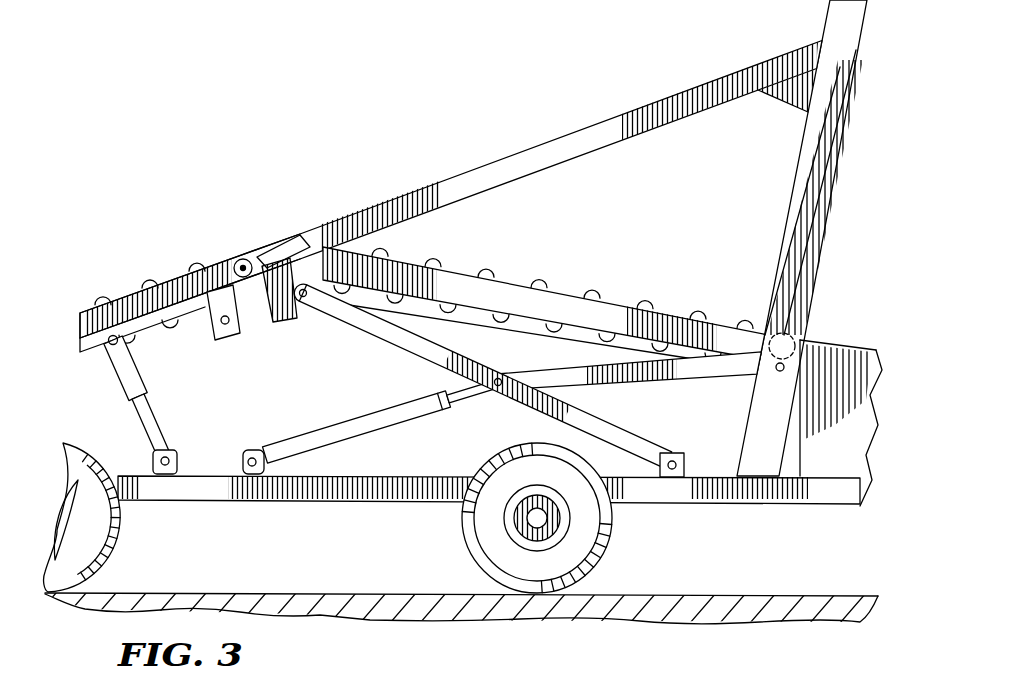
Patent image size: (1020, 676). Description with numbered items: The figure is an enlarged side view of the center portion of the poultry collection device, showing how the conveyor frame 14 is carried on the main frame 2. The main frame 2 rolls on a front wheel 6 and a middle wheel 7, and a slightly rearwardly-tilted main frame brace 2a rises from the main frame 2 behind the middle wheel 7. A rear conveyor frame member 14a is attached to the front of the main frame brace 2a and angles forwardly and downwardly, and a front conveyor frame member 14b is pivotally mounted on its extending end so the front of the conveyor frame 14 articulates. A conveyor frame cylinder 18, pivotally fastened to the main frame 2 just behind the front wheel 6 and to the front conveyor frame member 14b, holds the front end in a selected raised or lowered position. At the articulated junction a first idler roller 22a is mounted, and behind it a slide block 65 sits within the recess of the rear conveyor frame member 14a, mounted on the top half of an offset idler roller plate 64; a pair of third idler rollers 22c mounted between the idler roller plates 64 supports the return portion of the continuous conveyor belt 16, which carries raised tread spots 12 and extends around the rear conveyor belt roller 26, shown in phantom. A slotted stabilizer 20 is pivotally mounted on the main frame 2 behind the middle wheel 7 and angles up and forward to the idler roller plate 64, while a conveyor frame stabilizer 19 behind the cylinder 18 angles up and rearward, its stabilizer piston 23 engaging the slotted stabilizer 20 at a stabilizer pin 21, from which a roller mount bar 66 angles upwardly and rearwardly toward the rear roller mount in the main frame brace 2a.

The main frame 2 is at (860, 56).
The main frame brace 2a is at (840, 158).
The front wheel 6 is at (118, 536).
The middle wheel 7 is at (462, 528).
The raised tread spots 12 is at (110, 279).
The conveyor frame 14 is at (500, 160).
The rear conveyor frame member 14a is at (607, 130).
The front conveyor frame member 14b is at (184, 290).
The continuous conveyor belt 16 is at (140, 292).
The conveyor frame cylinder 18 is at (170, 440).
The conveyor frame stabilizer 19 is at (313, 434).
The slotted stabilizer 20 is at (607, 428).
The stabilizer pin 21 is at (494, 376).
The first idler roller 22a is at (221, 264).
The third idler roller 22c is at (213, 338).
The stabilizer piston 23 is at (446, 392).
The rear conveyor belt roller 26 is at (795, 331).
The idler roller plate 64 is at (285, 324).
The slide block 65 is at (280, 244).
The roller mount bar 66 is at (720, 372).